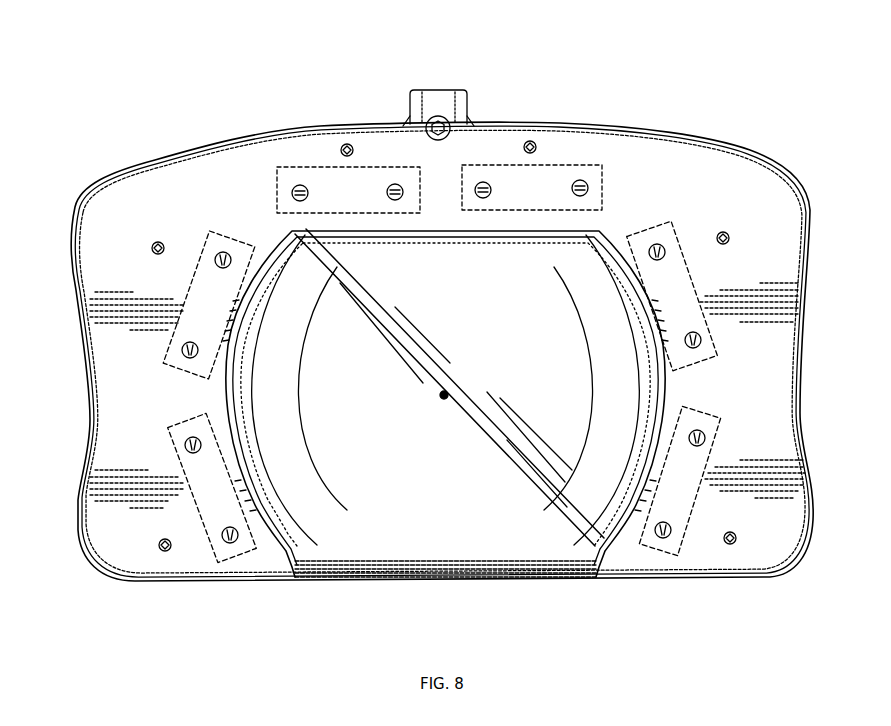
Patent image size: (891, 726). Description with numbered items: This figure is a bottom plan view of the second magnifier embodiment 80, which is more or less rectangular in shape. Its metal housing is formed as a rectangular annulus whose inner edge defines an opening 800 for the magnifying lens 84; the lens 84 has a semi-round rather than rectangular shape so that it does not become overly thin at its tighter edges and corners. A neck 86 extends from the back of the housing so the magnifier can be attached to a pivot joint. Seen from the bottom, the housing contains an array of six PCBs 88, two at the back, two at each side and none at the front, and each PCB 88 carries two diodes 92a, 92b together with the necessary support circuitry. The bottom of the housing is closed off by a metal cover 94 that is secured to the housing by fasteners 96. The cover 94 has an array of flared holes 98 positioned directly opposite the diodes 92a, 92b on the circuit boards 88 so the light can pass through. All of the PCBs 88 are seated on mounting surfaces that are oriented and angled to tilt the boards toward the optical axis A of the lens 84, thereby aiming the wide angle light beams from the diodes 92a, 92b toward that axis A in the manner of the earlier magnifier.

The second magnifier embodiment 80 is at (165, 78).
The magnifying lens 84 is at (449, 469).
The neck 86 is at (463, 100).
The PCBs 88 is at (207, 237).
The diode 92a is at (482, 200).
The diode 92b is at (574, 198).
The metal cover 94 is at (112, 549).
The fasteners 96 is at (730, 238).
The flared holes 98 is at (664, 250).
The opening 800 is at (593, 232).
The optical axis A is at (440, 395).